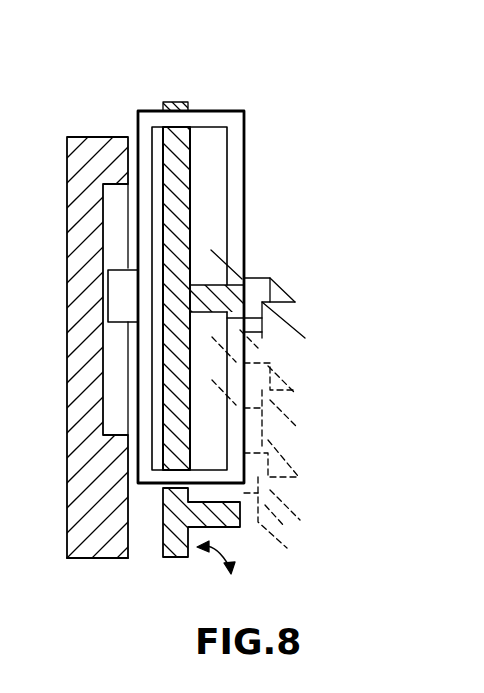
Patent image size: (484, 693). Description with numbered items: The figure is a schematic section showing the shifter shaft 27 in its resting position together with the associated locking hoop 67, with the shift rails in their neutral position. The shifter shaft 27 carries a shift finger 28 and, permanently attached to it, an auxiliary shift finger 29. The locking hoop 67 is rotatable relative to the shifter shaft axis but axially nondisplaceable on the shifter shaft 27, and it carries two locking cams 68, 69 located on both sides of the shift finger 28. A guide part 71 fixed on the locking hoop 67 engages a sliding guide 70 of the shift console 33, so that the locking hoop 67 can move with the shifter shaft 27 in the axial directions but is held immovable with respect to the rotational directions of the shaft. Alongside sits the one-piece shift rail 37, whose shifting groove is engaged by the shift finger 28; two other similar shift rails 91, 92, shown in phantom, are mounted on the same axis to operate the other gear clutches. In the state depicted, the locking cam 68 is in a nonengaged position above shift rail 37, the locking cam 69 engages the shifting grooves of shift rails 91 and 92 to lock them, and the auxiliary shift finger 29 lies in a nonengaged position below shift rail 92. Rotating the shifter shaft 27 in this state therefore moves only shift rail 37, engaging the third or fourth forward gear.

The shifter shaft 27 is at (188, 98).
The shift finger 28 is at (240, 304).
The auxiliary shift finger 29 is at (241, 529).
The shift console 33 is at (100, 560).
The shift rail 37 is at (303, 325).
The locking hoop 67 is at (247, 120).
The locking cam 68 is at (238, 257).
The locking cam 69 is at (238, 322).
The sliding guide 70 is at (92, 416).
The guide part 71 is at (117, 311).
The shift rail 91 is at (302, 412).
The shift rail 92 is at (296, 490).